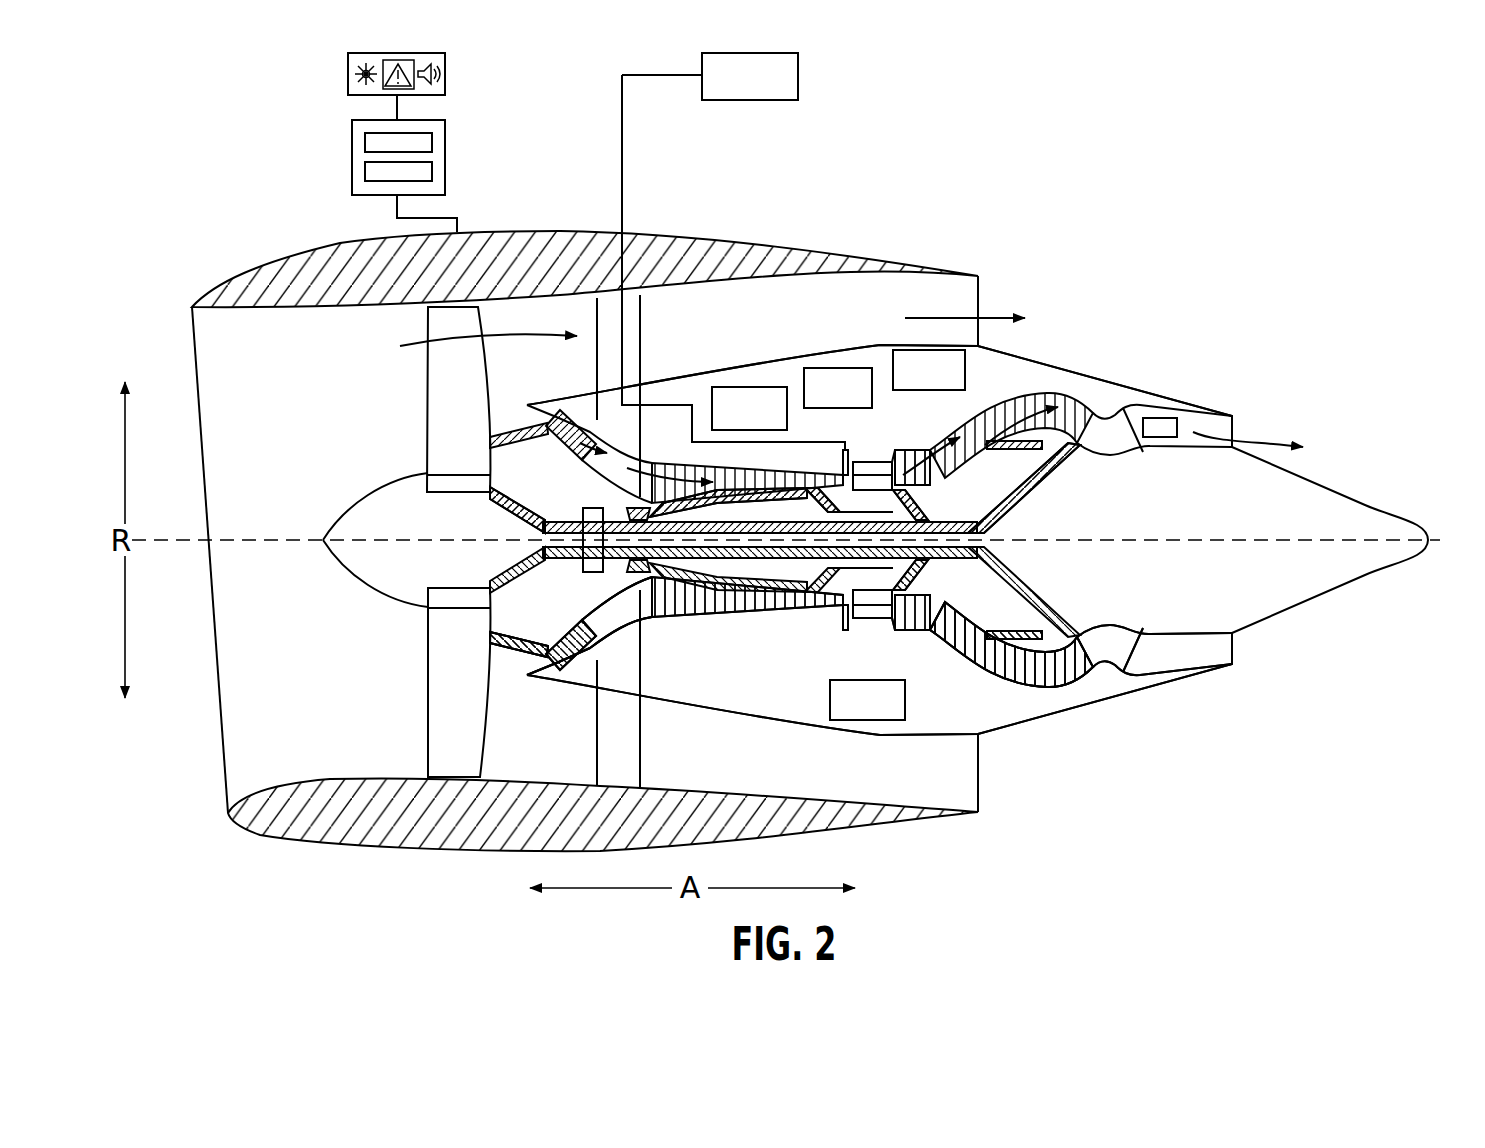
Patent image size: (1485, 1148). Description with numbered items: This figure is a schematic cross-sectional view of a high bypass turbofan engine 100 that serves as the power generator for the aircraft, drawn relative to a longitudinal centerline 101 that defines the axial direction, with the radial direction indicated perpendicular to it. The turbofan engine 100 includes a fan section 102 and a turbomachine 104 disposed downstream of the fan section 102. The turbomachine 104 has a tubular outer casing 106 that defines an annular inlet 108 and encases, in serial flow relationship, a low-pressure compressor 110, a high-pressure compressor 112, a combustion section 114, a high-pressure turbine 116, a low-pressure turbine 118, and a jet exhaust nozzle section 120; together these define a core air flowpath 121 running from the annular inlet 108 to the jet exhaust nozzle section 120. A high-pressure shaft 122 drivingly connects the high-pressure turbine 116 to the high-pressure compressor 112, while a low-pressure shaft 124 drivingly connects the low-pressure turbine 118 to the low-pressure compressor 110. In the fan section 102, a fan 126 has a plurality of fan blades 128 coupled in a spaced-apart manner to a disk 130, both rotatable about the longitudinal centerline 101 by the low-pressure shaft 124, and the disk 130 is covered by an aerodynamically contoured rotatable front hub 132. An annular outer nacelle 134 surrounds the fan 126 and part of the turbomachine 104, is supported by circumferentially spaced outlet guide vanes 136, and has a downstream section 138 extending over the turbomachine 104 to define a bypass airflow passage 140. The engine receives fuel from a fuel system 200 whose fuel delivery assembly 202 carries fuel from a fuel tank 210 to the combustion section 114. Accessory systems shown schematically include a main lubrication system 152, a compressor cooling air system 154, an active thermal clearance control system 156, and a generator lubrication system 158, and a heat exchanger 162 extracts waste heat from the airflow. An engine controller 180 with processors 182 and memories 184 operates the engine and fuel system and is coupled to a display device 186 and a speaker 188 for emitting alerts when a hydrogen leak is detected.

The turbofan engine 100 is at (1135, 250).
The longitudinal centerline 101 is at (1186, 538).
The fan section 102 is at (367, 333).
The turbomachine 104 is at (752, 338).
The outer casing 106 is at (808, 736).
The annular inlet 108 is at (545, 660).
The low-pressure compressor 110 is at (577, 677).
The high-pressure compressor 112 is at (670, 612).
The combustion section 114 is at (850, 628).
The high-pressure turbine 116 is at (935, 627).
The low-pressure turbine 118 is at (1060, 686).
The jet exhaust nozzle section 120 is at (1133, 660).
The core air flowpath 121 is at (615, 630).
The high-pressure shaft 122 is at (853, 510).
The low-pressure shaft 124 is at (947, 527).
The fan 126 is at (378, 407).
The fan blades 128 is at (425, 702).
The disk 130 is at (437, 485).
The front hub 132 is at (335, 558).
The outer nacelle 134 is at (472, 851).
The outlet guide vanes 136 is at (650, 330).
The downstream section 138 is at (893, 258).
The bypass airflow passage 140 is at (925, 310).
The main lubrication system 152 is at (749, 408).
The compressor cooling air system 154 is at (838, 388).
The active thermal clearance control system 156 is at (929, 370).
The generator lubrication system 158 is at (867, 700).
The heat exchanger 162 is at (1158, 416).
The engine controller 180 is at (447, 158).
The processors 182 is at (365, 143).
The memories 184 is at (365, 172).
The display device 186 is at (428, 88).
The speaker 188 is at (445, 68).
The fuel system 200 is at (208, 76).
The fuel delivery assembly 202 is at (625, 182).
The fuel tank 210 is at (800, 78).